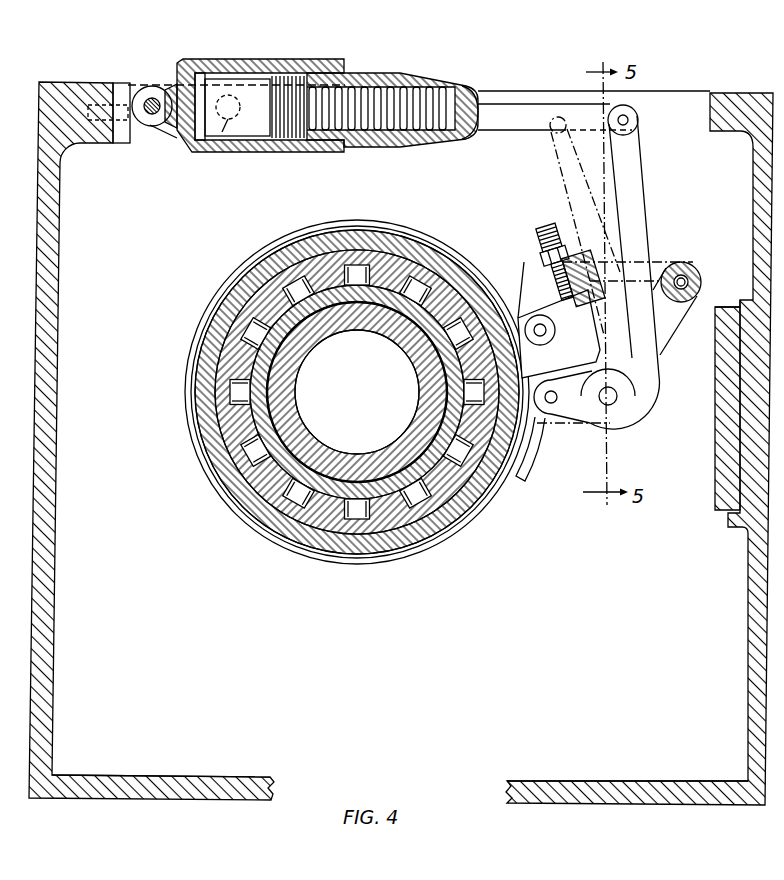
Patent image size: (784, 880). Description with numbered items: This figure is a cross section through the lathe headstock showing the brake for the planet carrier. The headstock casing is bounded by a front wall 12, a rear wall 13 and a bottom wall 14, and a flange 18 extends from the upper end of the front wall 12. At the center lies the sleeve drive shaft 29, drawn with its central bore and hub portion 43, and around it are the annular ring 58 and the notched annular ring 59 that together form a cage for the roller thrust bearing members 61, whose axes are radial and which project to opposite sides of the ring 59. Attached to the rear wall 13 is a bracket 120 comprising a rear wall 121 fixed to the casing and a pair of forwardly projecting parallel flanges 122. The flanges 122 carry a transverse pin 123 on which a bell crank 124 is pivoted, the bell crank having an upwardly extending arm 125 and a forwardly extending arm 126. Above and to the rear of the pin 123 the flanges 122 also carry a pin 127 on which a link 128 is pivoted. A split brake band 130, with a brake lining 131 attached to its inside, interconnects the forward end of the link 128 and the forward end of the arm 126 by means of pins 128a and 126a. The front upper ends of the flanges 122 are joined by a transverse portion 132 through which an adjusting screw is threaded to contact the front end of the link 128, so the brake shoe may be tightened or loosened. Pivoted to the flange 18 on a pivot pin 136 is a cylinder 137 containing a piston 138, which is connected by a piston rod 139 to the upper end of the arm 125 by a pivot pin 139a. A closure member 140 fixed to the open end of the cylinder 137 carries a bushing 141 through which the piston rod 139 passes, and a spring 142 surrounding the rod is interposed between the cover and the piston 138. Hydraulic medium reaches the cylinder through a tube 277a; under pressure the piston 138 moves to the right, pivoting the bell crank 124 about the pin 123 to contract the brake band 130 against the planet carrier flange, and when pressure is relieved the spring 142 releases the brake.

The front wall 12 is at (50, 575).
The rear wall 13 is at (755, 654).
The bottom wall 14 is at (143, 782).
The flange 18 is at (84, 133).
The sleeve drive shaft 29 is at (440, 414).
The bore 43 is at (308, 442).
The annular ring 58 is at (437, 521).
The annular ring 59 is at (471, 514).
The roller thrust bearing member 61 is at (420, 508).
The bracket 120 is at (585, 320).
The rear wall 121 is at (716, 393).
The flanges 122 is at (705, 302).
The transverse pin 123 is at (618, 410).
The bell crank 124 is at (677, 299).
The upwardly extending arm 125 is at (665, 246).
The forwardly extending arm 126 is at (577, 404).
The pin 126a is at (540, 466).
The pin 127 is at (680, 263).
The link 128 is at (515, 291).
The pin 128a is at (524, 262).
The split brake band 130 is at (307, 562).
The brake lining 131 is at (273, 534).
The transverse portion 132 is at (536, 316).
The pivot pin 136 is at (152, 97).
The cylinder 137 is at (258, 153).
The piston 138 is at (287, 86).
The piston rod 139 is at (503, 118).
The pivot pin 139a is at (634, 113).
The closure member 140 is at (378, 148).
The bushing 141 is at (462, 88).
The spring 142 is at (392, 95).
The tube 277a is at (146, 132).